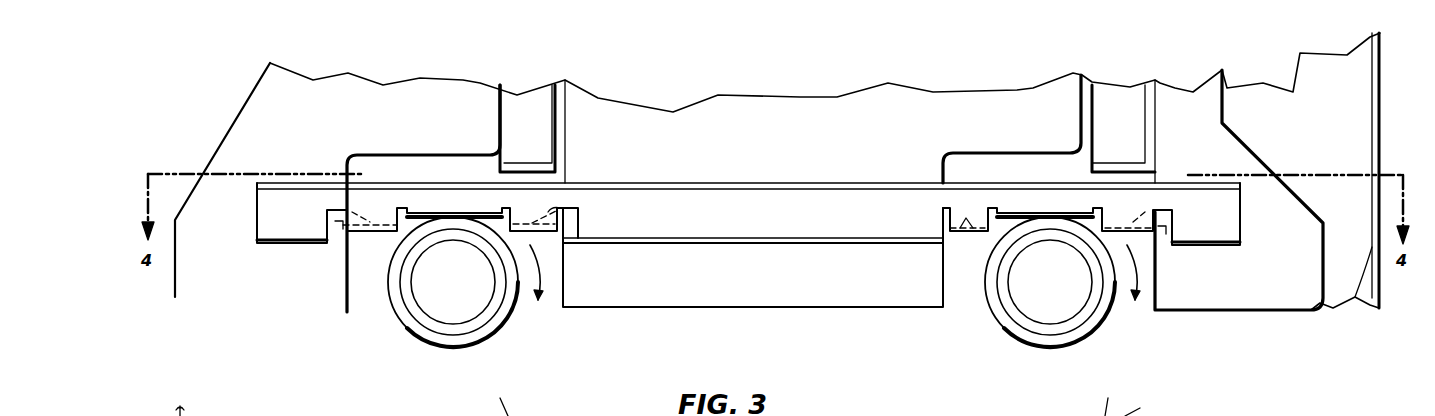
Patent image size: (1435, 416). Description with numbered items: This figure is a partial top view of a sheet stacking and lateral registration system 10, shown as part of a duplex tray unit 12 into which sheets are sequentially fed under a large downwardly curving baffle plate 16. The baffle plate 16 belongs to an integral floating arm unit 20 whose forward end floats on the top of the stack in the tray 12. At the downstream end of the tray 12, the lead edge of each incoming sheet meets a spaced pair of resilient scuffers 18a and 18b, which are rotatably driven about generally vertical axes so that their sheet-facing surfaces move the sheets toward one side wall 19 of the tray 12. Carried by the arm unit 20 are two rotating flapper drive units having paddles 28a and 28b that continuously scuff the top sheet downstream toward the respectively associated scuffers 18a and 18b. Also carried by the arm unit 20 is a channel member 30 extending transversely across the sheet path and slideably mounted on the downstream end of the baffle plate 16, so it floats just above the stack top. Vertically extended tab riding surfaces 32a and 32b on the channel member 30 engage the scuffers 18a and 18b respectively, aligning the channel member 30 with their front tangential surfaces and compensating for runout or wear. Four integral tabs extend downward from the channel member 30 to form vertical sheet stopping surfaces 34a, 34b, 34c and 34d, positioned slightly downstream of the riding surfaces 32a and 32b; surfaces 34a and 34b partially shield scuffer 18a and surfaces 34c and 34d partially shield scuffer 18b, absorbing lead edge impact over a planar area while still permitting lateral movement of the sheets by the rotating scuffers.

The sheet stacking and lateral registration system 10 is at (782, 83).
The duplex tray unit 12 is at (1348, 255).
The baffle plate 16 is at (813, 288).
The scuffer 18a is at (483, 335).
The scuffer 18b is at (1083, 318).
The side wall 19 is at (1355, 297).
The integral floating arm unit 20 is at (883, 270).
The paddle 28a is at (545, 112).
The paddle 28b is at (1130, 117).
The channel member 30 is at (695, 233).
The tab riding surface 32a is at (445, 218).
The tab riding surface 32b is at (1045, 213).
The sheet stopping surface 34a is at (340, 228).
The sheet stopping surface 34b is at (580, 215).
The sheet stopping surface 34c is at (957, 237).
The sheet stopping surface 34d is at (1153, 230).